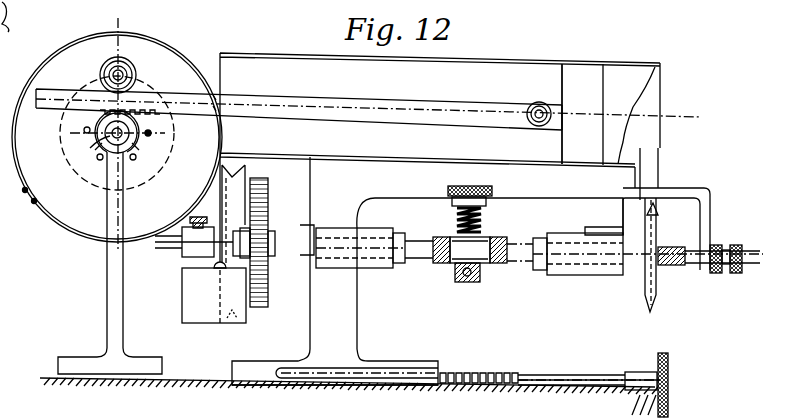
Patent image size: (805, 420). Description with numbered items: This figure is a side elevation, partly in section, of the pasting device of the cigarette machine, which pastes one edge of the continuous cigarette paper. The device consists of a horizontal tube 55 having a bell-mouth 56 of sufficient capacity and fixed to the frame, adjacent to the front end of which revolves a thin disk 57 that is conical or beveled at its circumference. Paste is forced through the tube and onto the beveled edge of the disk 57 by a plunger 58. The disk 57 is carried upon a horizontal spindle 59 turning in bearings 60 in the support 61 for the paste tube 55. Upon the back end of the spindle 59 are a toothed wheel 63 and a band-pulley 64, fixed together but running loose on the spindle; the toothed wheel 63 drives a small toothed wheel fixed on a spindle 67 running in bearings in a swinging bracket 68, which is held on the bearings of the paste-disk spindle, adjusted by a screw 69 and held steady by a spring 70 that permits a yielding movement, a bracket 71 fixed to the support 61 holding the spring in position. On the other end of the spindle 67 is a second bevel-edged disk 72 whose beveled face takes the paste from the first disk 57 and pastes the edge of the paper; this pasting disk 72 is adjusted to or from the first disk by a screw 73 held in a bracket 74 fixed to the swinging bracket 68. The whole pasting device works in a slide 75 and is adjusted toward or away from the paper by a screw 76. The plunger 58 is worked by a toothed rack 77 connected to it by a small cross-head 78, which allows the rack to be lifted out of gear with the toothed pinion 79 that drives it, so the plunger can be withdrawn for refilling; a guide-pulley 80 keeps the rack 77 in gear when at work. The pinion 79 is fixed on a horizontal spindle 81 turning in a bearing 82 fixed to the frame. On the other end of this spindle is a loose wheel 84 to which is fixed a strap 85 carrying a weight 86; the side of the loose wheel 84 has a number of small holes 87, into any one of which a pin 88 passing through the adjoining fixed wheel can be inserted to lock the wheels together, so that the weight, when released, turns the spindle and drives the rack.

The horizontal tube 55 is at (539, 63).
The bell-mouth 56 is at (649, 172).
The thin disk 57 is at (641, 290).
The plunger 58 is at (562, 86).
The horizontal spindle 59 is at (165, 248).
The bearings 60 is at (310, 224).
The support 61 is at (315, 174).
The toothed wheel 63 is at (262, 306).
The band-pulley 64 is at (212, 318).
The spindle 67 is at (512, 262).
The swinging bracket 68 is at (340, 267).
The screw 69 is at (492, 191).
The spring 70 is at (483, 221).
The bracket 71 is at (452, 201).
The second bevel-edged wheel or disk 72 is at (652, 286).
The screw 73 is at (736, 266).
The bracket 74 is at (711, 201).
The slide 75 is at (395, 368).
The screw 76 is at (598, 378).
The toothed rack 77 is at (393, 101).
The cross-head 78 is at (543, 124).
The toothed pinion 79 is at (137, 150).
The guide-pulley 80 is at (102, 68).
The horizontal spindle 81 is at (99, 151).
The bearing 82 is at (105, 299).
The loose wheel 84 is at (166, 62).
The strap 85 is at (44, 62).
The weight 86 is at (189, 297).
The small holes 87 is at (84, 130).
The pin 88 is at (150, 133).